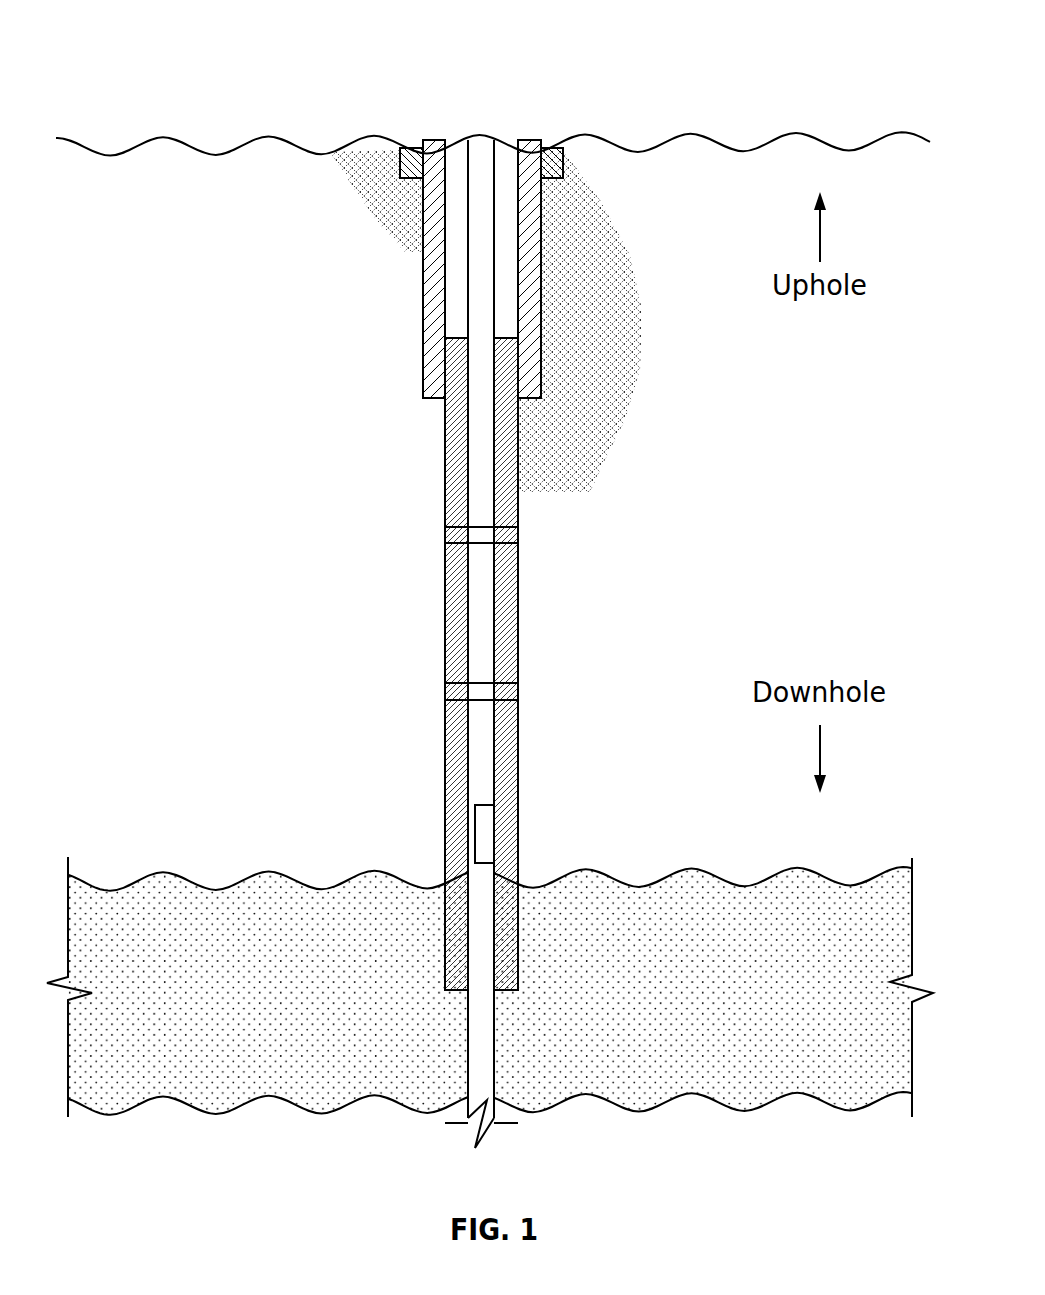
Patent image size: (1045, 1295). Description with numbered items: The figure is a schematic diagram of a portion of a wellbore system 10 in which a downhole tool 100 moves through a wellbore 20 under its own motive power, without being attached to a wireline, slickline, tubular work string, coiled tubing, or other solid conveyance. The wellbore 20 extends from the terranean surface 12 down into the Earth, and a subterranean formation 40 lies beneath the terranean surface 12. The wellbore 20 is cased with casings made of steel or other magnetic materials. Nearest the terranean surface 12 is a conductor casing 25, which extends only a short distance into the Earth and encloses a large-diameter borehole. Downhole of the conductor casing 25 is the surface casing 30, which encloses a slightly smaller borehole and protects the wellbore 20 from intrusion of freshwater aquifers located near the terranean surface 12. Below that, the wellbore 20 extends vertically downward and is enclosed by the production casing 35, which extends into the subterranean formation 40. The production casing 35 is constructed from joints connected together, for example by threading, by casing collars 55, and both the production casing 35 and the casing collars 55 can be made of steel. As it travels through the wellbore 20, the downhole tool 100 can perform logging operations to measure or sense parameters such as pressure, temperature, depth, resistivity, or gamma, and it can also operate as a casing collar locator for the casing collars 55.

The wellbore system 10 is at (123, 53).
The terranean surface 12 is at (857, 148).
The wellbore 20 is at (495, 262).
The conductor casing 25 is at (563, 160).
The surface casing 30 is at (422, 352).
The production casing 35 is at (445, 630).
The subterranean formation 40 is at (705, 882).
The casing collars 55 is at (507, 532).
The downhole tool 100 is at (475, 826).